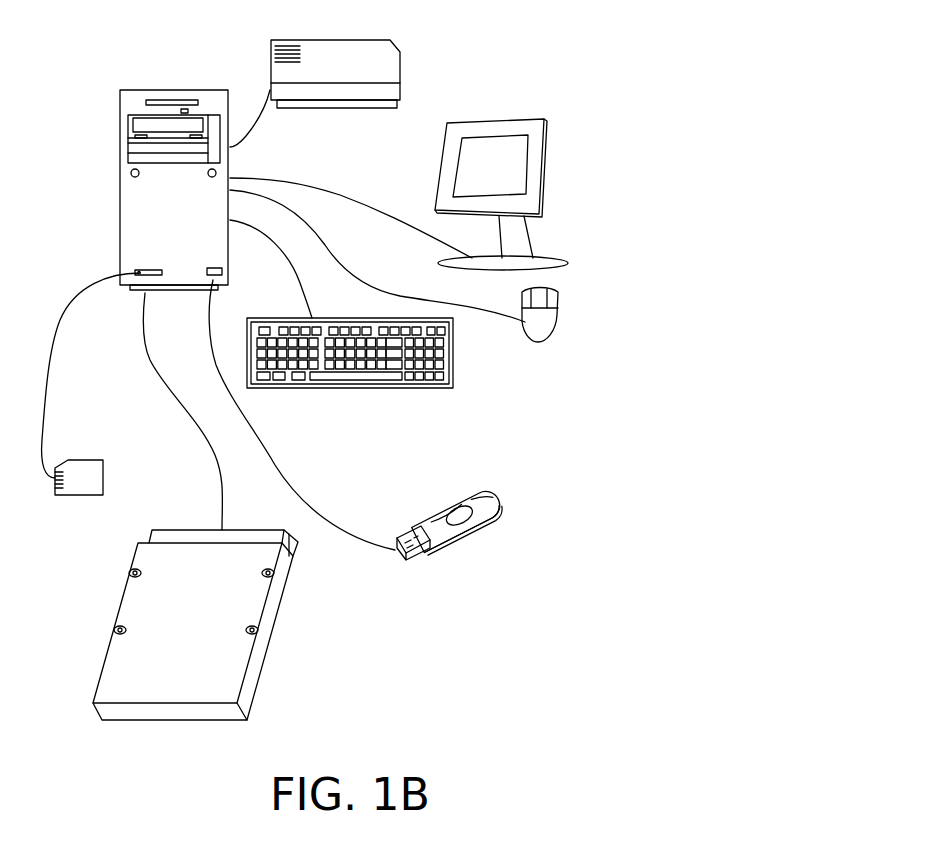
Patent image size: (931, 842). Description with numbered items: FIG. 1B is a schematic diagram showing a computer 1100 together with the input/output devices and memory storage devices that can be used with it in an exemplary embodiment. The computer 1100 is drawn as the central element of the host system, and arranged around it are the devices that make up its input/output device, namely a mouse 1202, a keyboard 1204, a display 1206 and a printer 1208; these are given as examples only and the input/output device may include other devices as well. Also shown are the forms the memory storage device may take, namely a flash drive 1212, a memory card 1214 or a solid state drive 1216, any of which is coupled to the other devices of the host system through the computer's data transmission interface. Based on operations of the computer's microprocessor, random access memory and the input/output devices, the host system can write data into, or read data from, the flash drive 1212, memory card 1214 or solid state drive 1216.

The computer 1100 is at (177, 90).
The mouse 1202 is at (553, 315).
The keyboard 1204 is at (453, 366).
The display 1206 is at (505, 120).
The printer 1208 is at (332, 40).
The flash drive 1212 is at (452, 516).
The memory card 1214 is at (104, 468).
The solid state drive 1216 is at (247, 511).